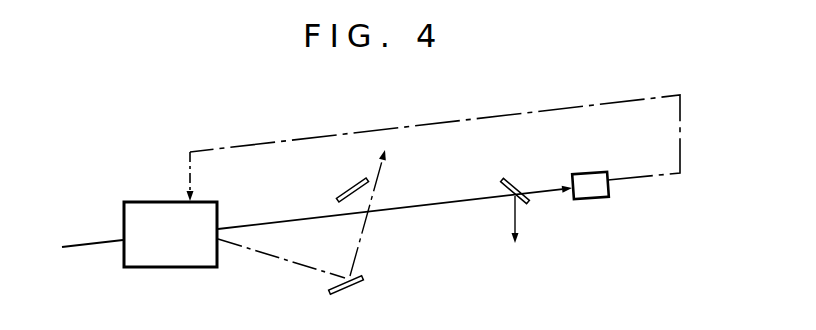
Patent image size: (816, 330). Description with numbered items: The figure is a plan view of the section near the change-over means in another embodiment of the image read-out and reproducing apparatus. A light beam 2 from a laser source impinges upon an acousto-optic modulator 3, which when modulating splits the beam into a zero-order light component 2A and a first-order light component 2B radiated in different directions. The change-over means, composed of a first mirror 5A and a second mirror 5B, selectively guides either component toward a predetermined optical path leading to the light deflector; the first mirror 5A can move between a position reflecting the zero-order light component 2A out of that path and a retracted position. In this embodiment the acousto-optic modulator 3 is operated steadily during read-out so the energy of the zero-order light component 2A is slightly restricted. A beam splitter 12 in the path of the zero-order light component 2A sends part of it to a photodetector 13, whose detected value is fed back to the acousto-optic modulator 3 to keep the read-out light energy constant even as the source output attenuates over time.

The light beam 2 is at (97, 243).
The acousto-optic modulator 3 is at (170, 258).
The zero-order light component 2A is at (437, 203).
The first-order light component 2B is at (276, 259).
The first mirror 5A is at (358, 184).
The second mirror 5B is at (353, 287).
The beam splitter 12 is at (519, 157).
The photodetector 13 is at (598, 201).